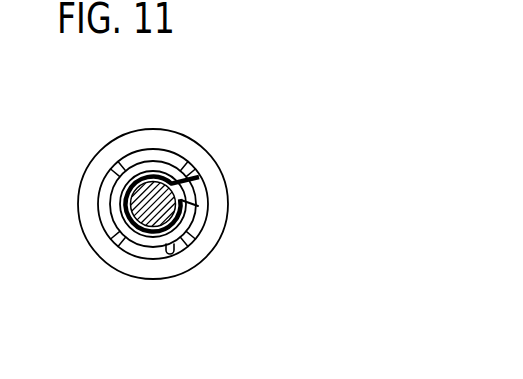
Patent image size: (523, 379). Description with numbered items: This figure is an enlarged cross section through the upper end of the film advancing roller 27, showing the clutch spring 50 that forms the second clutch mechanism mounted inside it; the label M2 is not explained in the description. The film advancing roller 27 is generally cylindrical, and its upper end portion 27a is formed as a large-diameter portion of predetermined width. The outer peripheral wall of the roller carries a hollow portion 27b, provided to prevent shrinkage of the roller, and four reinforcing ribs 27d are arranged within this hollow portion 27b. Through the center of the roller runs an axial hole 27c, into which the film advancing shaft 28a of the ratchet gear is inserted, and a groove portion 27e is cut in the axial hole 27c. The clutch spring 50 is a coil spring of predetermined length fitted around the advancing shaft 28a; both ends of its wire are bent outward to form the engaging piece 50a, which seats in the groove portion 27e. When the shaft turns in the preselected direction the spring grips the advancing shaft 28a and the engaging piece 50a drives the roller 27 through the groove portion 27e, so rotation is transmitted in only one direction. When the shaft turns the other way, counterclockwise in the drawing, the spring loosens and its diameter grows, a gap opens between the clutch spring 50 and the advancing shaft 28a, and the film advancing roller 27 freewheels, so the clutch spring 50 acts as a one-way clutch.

The motor M2 is at (78, 128).
The film advancing roller 27 is at (81, 173).
The upper end portion 27a is at (210, 153).
The hollow portion 27b is at (176, 254).
The axial hole 27c is at (139, 252).
The reinforcing ribs 27d is at (104, 247).
The groove portion 27e is at (206, 224).
The film advancing shaft 28a is at (127, 209).
The clutch spring 50 is at (153, 173).
The engaging piece 50a is at (196, 206).